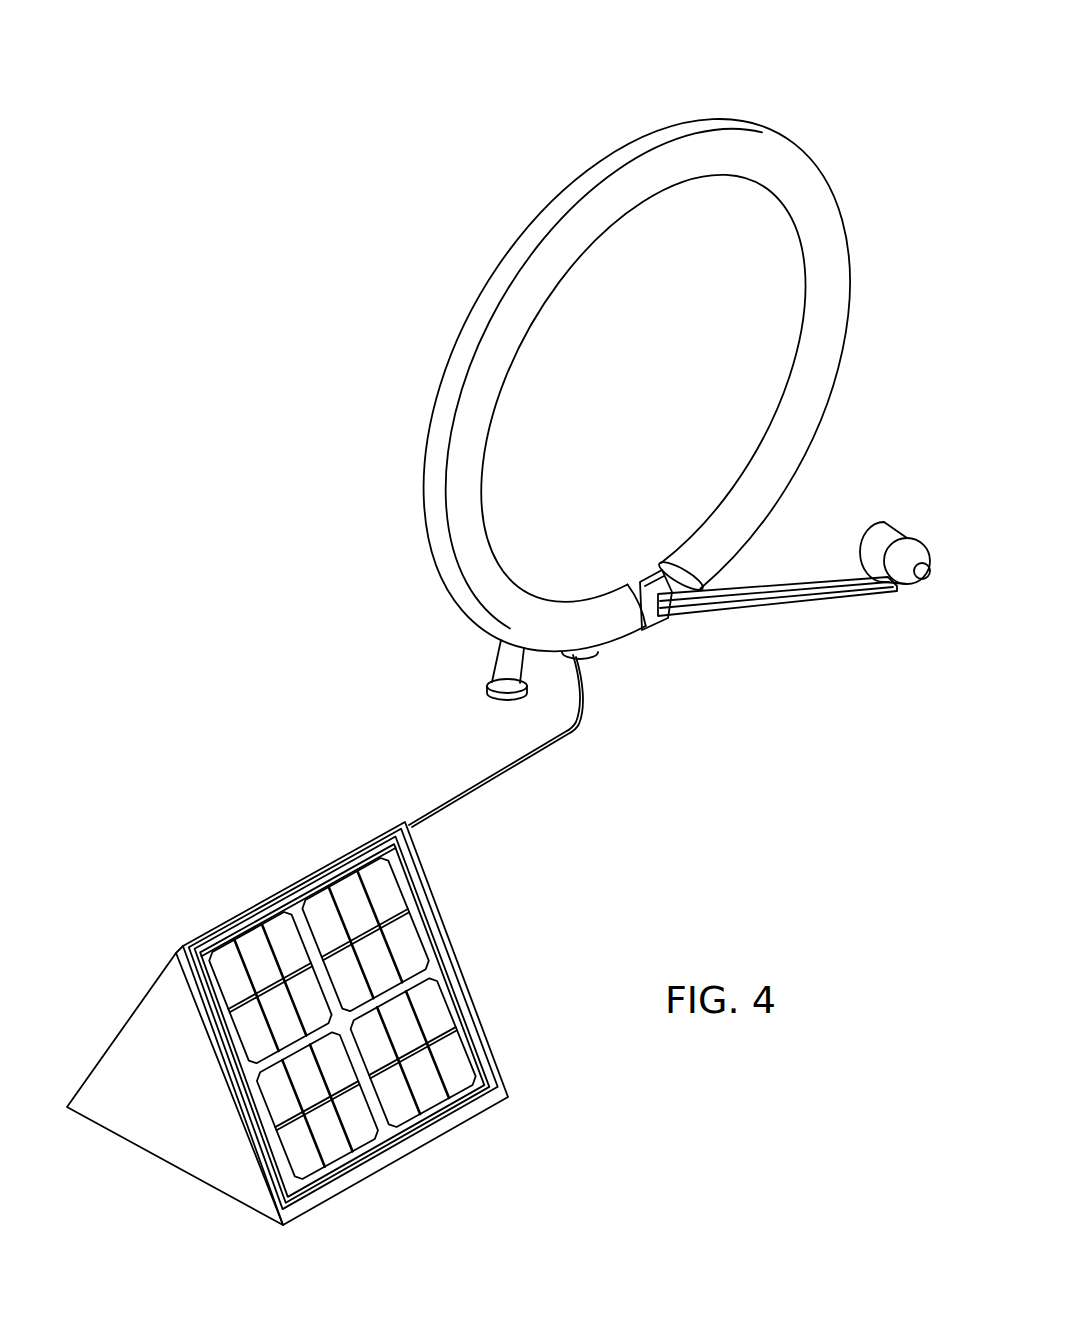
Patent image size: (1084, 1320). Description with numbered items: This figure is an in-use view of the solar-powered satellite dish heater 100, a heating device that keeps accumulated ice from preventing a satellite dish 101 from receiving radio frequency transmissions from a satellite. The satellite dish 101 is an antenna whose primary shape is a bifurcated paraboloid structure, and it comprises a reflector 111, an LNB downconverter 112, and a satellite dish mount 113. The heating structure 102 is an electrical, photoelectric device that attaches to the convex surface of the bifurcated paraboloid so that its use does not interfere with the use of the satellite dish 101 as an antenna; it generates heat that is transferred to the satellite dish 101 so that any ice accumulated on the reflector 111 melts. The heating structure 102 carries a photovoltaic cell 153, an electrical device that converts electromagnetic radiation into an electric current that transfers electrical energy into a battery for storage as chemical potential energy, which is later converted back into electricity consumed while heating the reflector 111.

The solar-powered satellite dish heater 100 is at (431, 126).
The satellite dish 101 is at (615, 110).
The reflector 111 is at (772, 287).
The LNB downconverter 112 is at (803, 577).
The satellite dish mount 113 is at (497, 662).
The heating structure 102 is at (268, 874).
The photovoltaic cell 153 is at (405, 1027).